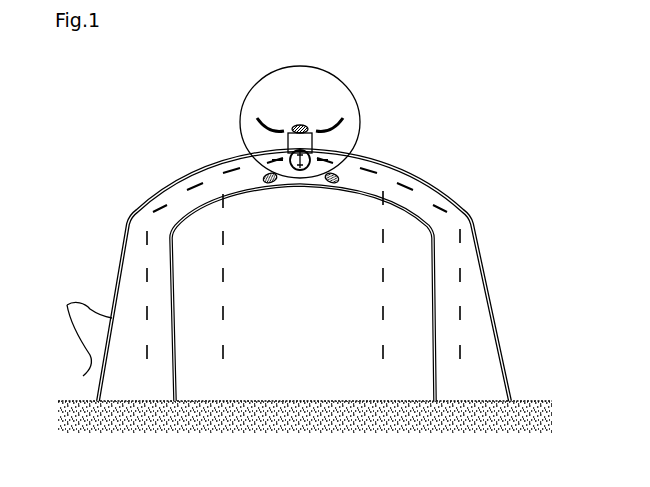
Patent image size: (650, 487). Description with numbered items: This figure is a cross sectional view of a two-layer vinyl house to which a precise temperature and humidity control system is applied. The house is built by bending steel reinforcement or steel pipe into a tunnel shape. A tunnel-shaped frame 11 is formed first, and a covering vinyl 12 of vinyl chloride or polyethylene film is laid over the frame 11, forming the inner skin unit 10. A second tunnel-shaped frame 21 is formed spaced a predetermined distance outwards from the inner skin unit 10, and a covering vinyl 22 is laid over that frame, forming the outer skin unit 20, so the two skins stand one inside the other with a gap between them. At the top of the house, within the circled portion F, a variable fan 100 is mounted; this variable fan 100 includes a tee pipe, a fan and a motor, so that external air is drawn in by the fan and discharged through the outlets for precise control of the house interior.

The inner skin unit 10 is at (304, 249).
The tunnel-shaped frame 11 is at (193, 212).
The covering vinyl 12 is at (283, 176).
The outer skin unit 20 is at (274, 312).
The tunnel-shaped frame 21 is at (115, 302).
The covering vinyl 22 is at (80, 250).
The variable fan 100 is at (312, 141).
The portion F is at (350, 92).